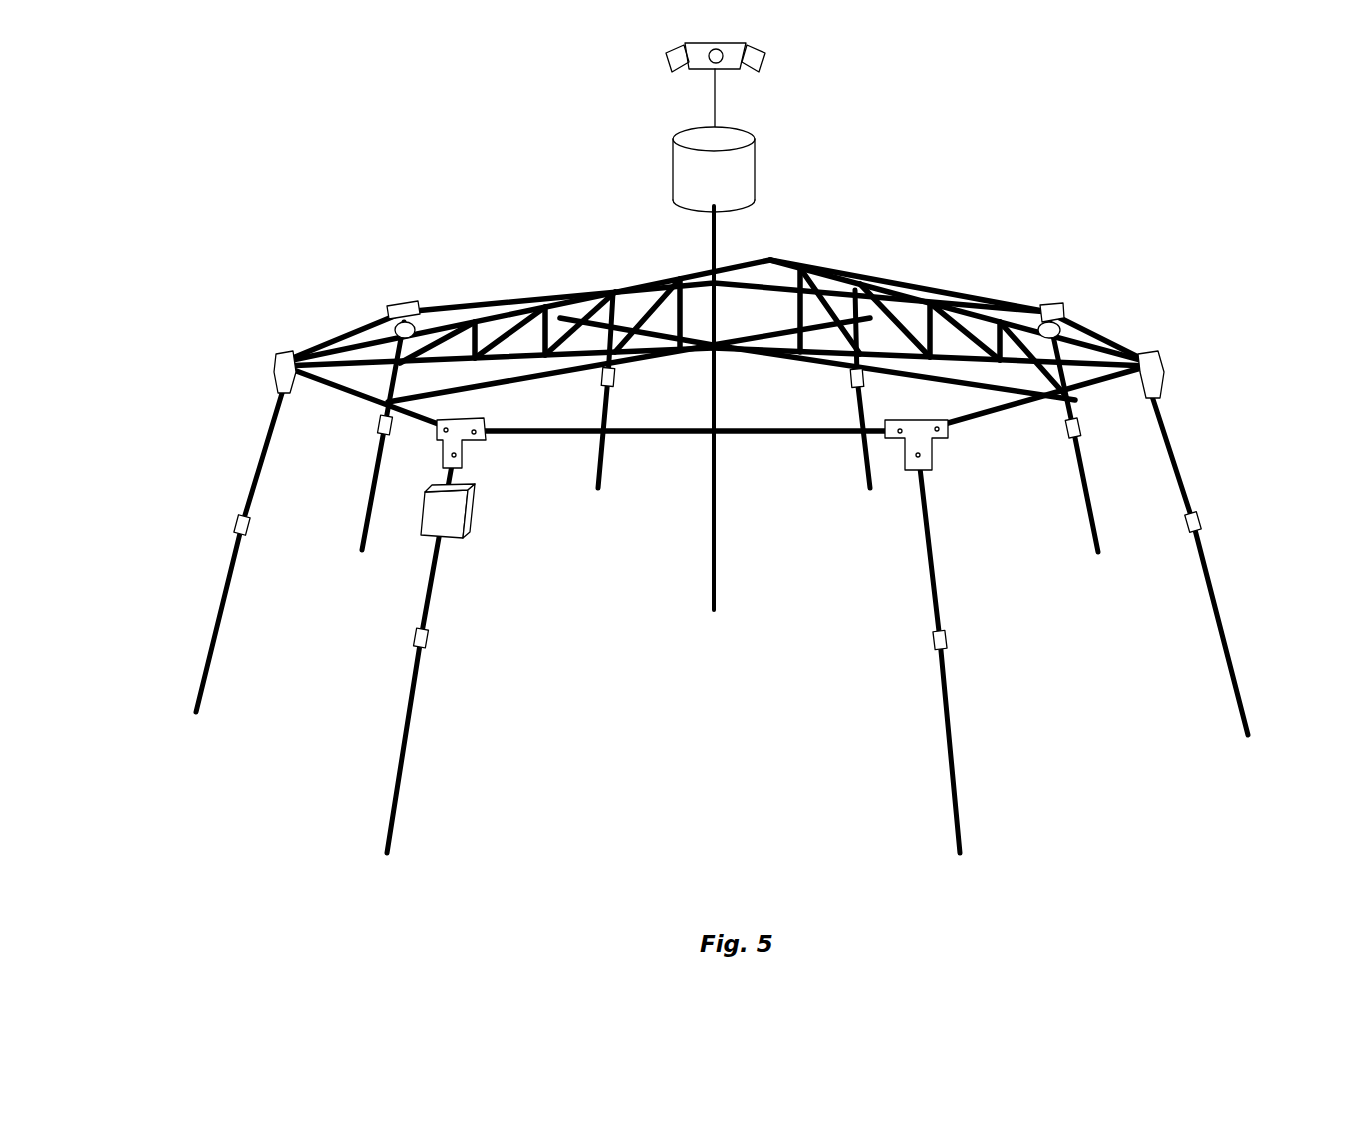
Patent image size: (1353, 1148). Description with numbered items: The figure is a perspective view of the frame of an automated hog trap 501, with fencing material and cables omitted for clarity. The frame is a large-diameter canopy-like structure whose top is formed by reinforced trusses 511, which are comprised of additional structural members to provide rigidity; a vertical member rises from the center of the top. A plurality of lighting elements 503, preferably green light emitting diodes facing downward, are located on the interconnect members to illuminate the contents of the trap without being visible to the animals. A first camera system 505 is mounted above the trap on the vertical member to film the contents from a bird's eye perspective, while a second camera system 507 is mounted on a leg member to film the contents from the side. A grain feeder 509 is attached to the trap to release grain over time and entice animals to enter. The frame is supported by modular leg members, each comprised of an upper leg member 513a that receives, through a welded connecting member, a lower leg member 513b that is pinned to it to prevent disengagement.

The trap 501 is at (736, 518).
The lighting elements 503 is at (719, 380).
The first camera system 505 is at (760, 82).
The second camera system 507 is at (492, 525).
The grain feeder 509 is at (760, 147).
The reinforced trusses 511 is at (617, 408).
The upper leg member 513a is at (711, 457).
The lower leg member 513b is at (763, 610).